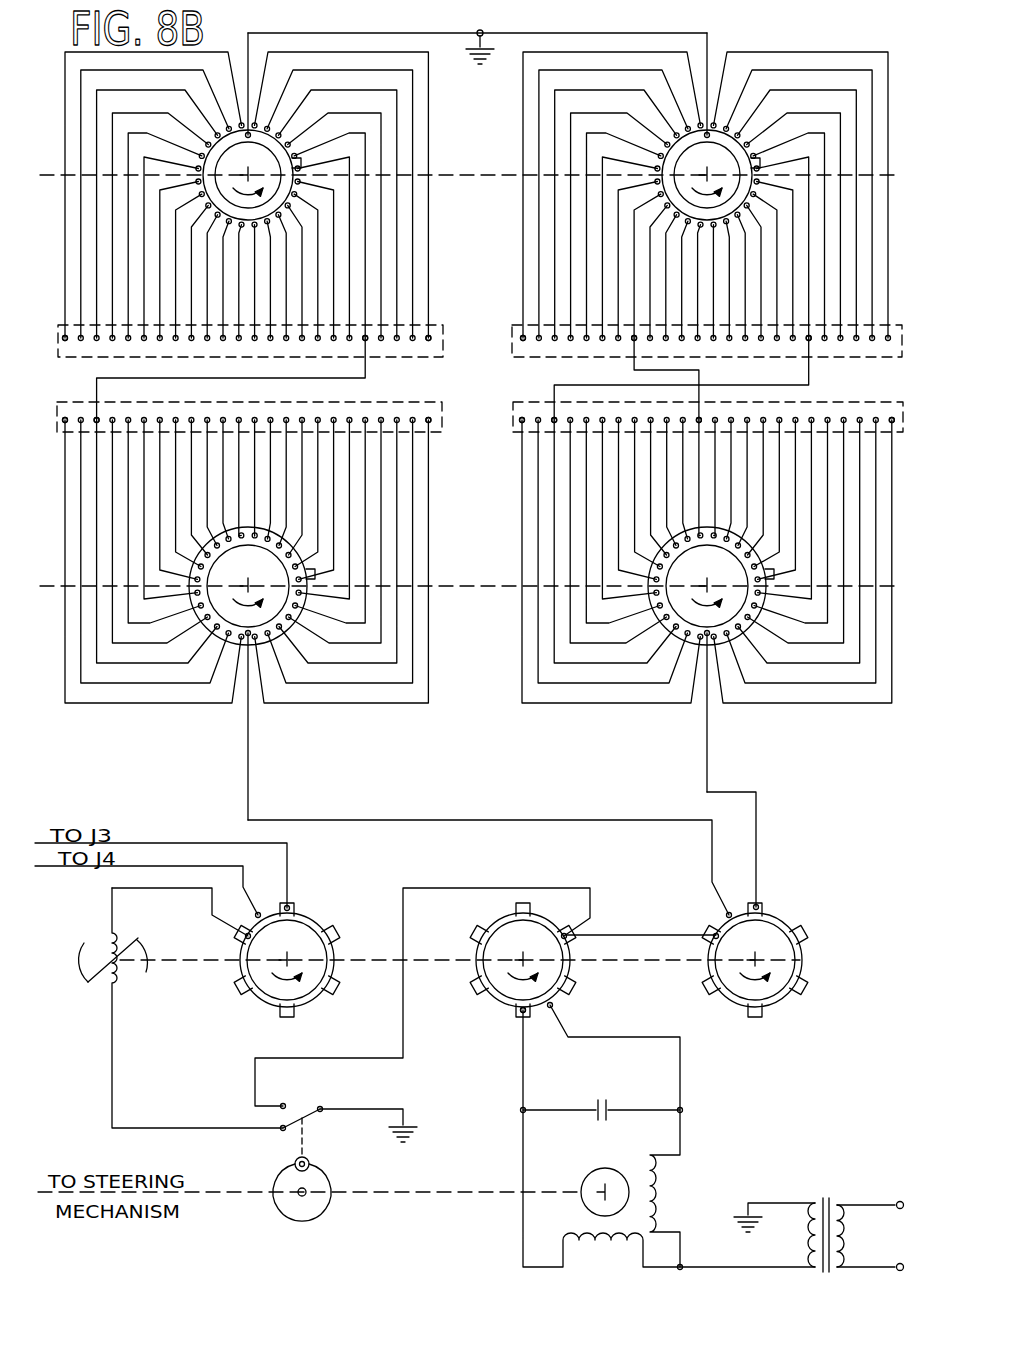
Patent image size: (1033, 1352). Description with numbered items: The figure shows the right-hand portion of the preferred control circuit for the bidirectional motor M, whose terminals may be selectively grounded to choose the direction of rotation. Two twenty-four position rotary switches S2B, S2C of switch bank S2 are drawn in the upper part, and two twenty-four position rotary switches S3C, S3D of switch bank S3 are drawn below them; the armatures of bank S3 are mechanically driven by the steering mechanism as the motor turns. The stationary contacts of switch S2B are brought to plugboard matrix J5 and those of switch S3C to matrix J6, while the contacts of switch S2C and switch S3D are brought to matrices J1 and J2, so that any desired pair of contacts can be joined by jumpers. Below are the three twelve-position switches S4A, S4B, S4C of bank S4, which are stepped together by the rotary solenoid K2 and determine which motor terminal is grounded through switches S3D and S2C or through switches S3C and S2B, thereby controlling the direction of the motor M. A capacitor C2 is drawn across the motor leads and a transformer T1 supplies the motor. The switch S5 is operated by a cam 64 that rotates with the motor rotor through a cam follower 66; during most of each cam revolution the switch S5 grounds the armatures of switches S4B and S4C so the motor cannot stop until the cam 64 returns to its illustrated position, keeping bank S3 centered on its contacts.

The rotary switch S2B is at (279, 187).
The rotary switch S2C is at (674, 187).
The switch bank S2 is at (470, 224).
The rotary switch S3C is at (282, 619).
The rotary switch S3D is at (667, 605).
The switch bank S3 is at (470, 671).
The matrix J5 is at (233, 319).
The matrix J1 is at (713, 320).
The matrix J6 is at (234, 403).
The matrix J2 is at (714, 432).
The twelve-position switch S4A is at (297, 952).
The twelve-position switch S4B is at (497, 959).
The twelve-position switch S4C is at (771, 948).
The rotary solenoid K2 is at (169, 1008).
The switch S5 is at (350, 1110).
The cam follower 66 is at (324, 1164).
The cam 64 is at (318, 1199).
The capacitor C2 is at (602, 1101).
The bidirectional motor M is at (587, 1197).
The transformer T1 is at (819, 1218).